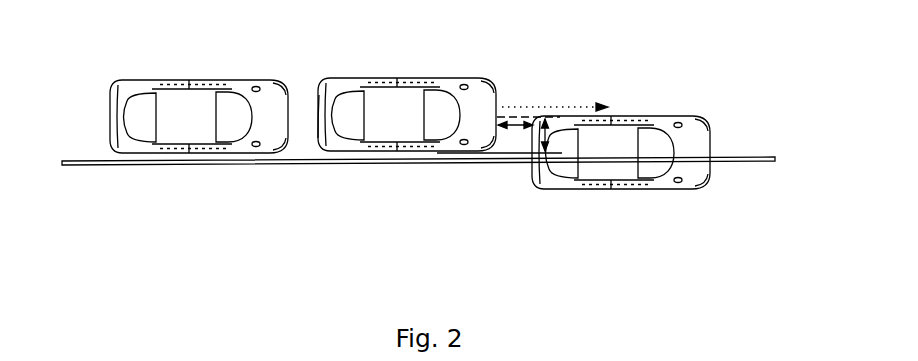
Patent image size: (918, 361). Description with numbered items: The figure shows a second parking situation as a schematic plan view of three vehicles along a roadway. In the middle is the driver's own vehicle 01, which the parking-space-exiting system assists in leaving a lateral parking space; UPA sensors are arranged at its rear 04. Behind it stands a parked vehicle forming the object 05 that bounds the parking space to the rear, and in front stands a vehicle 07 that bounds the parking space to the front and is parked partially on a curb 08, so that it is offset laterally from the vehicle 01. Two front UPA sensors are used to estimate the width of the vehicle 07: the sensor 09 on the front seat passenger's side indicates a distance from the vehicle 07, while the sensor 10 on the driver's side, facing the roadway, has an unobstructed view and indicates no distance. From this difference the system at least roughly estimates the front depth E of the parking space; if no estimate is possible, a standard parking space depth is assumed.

The vehicle 01 is at (391, 118).
The rear of the vehicle 04 is at (317, 117).
The object bounding the parking space to the rear 05 is at (177, 125).
The object bounding the parking space to the front 07 is at (687, 152).
The curb 08 is at (213, 164).
The UPA sensor 09 is at (515, 120).
The UPA sensor 10 is at (538, 107).
The front depth of the parking space E is at (543, 128).